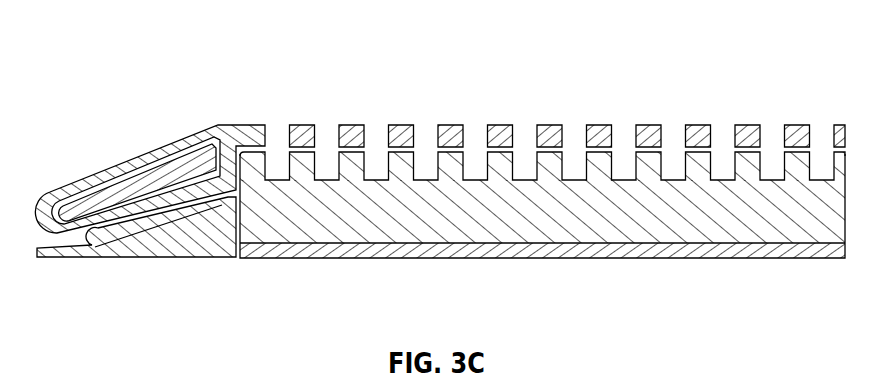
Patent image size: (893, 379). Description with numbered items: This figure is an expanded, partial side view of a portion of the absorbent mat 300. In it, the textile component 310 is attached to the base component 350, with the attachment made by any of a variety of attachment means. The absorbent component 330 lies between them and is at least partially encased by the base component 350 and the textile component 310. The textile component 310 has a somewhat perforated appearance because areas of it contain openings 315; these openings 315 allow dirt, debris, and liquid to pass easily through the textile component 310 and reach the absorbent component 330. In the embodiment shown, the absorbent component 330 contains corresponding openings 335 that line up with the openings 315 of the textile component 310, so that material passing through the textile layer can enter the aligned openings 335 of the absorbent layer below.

The absorbent mat 300 is at (763, 28).
The textile component 310 is at (448, 126).
The openings 315 is at (625, 138).
The absorbent component 330 is at (367, 232).
The corresponding openings 335 is at (723, 162).
The base component 350 is at (140, 258).